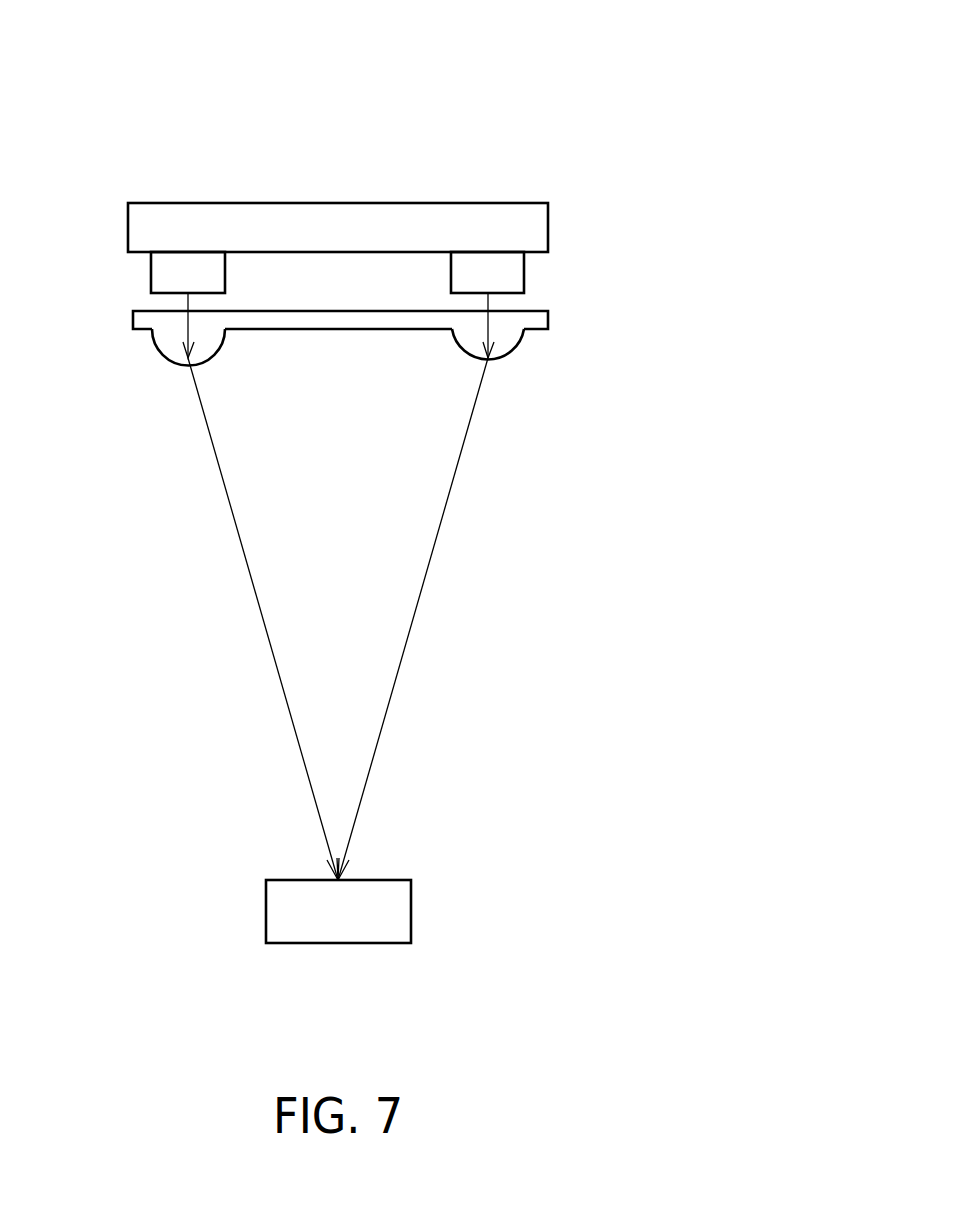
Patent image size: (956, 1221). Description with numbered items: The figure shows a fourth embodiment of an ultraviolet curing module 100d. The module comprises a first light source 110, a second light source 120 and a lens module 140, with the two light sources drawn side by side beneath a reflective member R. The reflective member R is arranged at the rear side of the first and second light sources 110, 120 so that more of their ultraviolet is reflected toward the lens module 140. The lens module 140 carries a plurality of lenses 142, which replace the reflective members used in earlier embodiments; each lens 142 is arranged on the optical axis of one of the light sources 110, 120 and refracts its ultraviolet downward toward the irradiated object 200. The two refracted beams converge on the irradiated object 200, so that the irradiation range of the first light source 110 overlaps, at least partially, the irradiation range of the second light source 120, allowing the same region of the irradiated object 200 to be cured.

The ultraviolet curing module 100d is at (553, 80).
The reflective member R is at (549, 223).
The first light source 110 is at (168, 285).
The second light source 120 is at (468, 285).
The lens module 140 is at (572, 313).
The lenses 142 is at (152, 338).
The irradiated object 200 is at (320, 927).